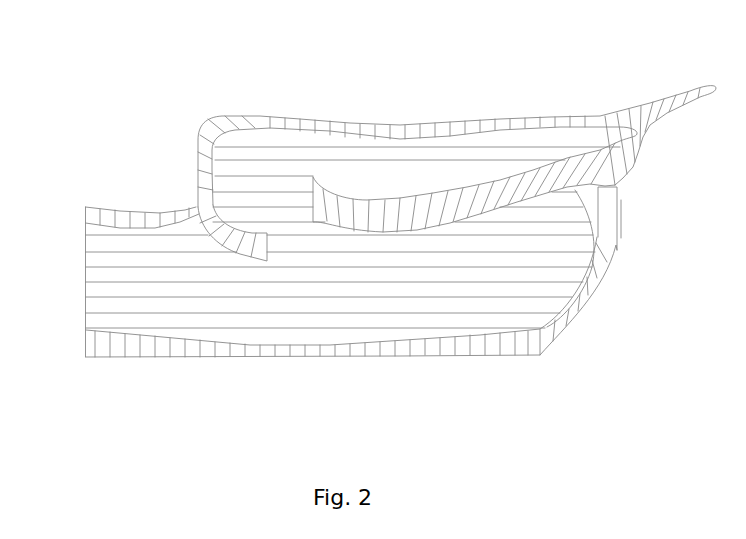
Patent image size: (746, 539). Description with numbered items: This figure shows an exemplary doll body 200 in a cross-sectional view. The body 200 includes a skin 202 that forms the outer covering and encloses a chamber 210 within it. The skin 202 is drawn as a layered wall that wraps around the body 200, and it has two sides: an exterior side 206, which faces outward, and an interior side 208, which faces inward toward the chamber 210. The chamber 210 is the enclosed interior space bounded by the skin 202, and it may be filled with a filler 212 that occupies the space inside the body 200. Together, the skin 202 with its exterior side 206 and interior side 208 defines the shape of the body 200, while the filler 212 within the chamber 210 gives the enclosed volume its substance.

The body 200 is at (360, 48).
The skin 202 is at (482, 130).
The exterior side 206 is at (620, 238).
The interior side 208 is at (593, 303).
The chamber 210 is at (102, 303).
The filler 212 is at (132, 253).